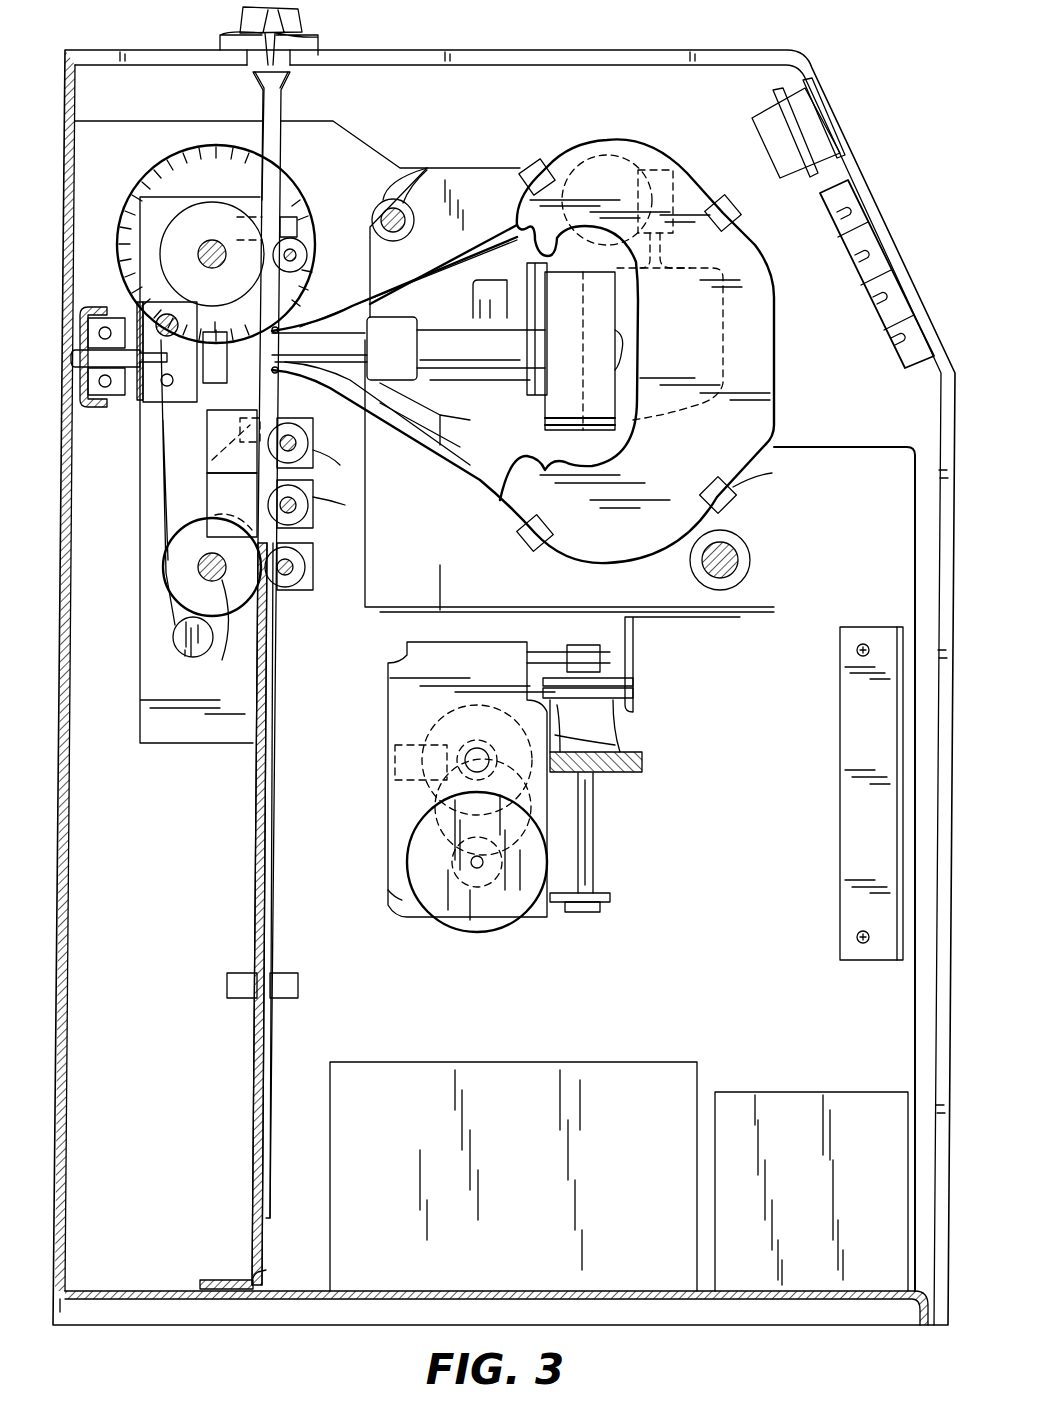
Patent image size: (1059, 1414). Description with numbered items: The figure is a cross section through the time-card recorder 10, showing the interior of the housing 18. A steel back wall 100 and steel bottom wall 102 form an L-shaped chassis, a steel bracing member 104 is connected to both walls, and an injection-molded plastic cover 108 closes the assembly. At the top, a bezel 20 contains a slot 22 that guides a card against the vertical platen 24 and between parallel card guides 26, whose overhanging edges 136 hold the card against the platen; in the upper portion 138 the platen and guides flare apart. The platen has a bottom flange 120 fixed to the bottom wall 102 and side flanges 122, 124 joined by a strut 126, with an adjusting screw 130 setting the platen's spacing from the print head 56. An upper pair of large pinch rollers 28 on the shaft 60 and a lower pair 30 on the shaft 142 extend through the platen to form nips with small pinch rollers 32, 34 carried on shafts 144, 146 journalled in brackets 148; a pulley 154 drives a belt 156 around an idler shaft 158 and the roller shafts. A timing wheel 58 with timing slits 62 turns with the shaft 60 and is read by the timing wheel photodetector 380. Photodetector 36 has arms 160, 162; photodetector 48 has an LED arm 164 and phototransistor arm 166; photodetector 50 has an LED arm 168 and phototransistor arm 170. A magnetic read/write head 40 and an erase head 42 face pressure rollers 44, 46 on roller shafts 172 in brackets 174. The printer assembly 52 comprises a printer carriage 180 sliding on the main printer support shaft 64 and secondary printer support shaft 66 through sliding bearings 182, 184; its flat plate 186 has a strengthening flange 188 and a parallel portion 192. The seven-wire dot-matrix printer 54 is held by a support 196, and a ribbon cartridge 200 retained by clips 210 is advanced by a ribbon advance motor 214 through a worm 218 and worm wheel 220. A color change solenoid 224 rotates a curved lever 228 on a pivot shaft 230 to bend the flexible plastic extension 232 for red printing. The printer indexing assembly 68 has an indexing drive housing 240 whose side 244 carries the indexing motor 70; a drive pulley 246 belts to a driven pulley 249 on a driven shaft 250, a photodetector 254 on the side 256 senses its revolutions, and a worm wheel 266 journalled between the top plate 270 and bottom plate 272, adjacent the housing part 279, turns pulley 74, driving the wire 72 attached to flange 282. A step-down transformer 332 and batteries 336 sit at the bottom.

The time-card recorder 10 is at (517, 42).
The housing 18 is at (746, 44).
The bezel 20 is at (318, 44).
The slot 22 is at (280, 23).
The platen 24 is at (255, 888).
The parallel card guides 26 is at (275, 892).
The upper pair of large pinch rollers 28 is at (180, 215).
The lower pair of large pinch rollers 30 is at (165, 565).
The upper pair of small pinch rollers 32 is at (306, 252).
The lower pair of small pinch rollers 34 is at (295, 600).
The photodetector 36 is at (300, 230).
The magnetic read/write head 40 is at (207, 442).
The magnetic erase head 42 is at (223, 500).
The pressure roller 44 is at (315, 430).
The pressure roller 46 is at (313, 500).
The photodetector 48 is at (226, 429).
The photodetector 50 is at (298, 967).
The printer assembly 52 is at (170, 195).
The seven-wire dot-matrix printer 54 is at (515, 330).
The print head 56 is at (228, 375).
The timing wheel 58 is at (133, 210).
The shaft 60 is at (205, 248).
The timing slits 62 is at (198, 152).
The main printer support shaft 64 is at (752, 560).
The secondary printer support shaft 66 is at (385, 205).
The printer indexing assembly 68 is at (661, 855).
The indexing motor 70 is at (432, 925).
The wire 72 is at (640, 680).
The pulley 74 is at (640, 696).
The steel back wall 100 is at (68, 240).
The steel bottom wall 102 is at (372, 1300).
The steel bracing member 104 is at (848, 447).
The cover 108 is at (920, 1015).
The flange 120 is at (220, 1275).
The side flange 122 is at (178, 745).
The side flange 124 is at (95, 310).
The strut 126 is at (108, 400).
The adjusting screw 130 is at (85, 405).
The overhanging edge 136 is at (290, 82).
The upper portion of the platen 138 is at (258, 73).
The shaft 142 is at (222, 580).
The shaft 144 is at (300, 270).
The shaft 146 is at (307, 564).
The brackets 148 is at (374, 275).
The pulley 154 is at (186, 642).
The belt 156 is at (152, 503).
The idler shaft 158 is at (178, 318).
The arm 160 is at (285, 215).
The arm 162 is at (248, 200).
The LED arm 164 is at (293, 418).
The phototransistor arm 166 is at (230, 455).
The LED arm 168 is at (300, 985).
The phototransistor arm 170 is at (236, 992).
The roller shafts 172 is at (312, 447).
The brackets 174 is at (313, 462).
The printer carriage 180 is at (495, 167).
The sliding bearing 182 is at (757, 540).
The sliding bearing 184 is at (420, 180).
The flat plate 186 is at (775, 452).
The flange 188 is at (460, 610).
The parallel portion 192 is at (662, 557).
The support 196 is at (470, 312).
The ribbon cartridge 200 is at (590, 563).
The clips 210 is at (545, 160).
The ribbon advance motor 214 is at (760, 330).
The worm 218 is at (678, 185).
The worm wheel 220 is at (628, 168).
The color change solenoid 224 is at (420, 472).
The curved lever 228 is at (455, 378).
The pivot shaft 230 is at (548, 425).
The flexible plastic extension 232 is at (418, 300).
The indexing drive housing 240 is at (420, 820).
The side 244 is at (600, 812).
The drive pulley 246 is at (495, 930).
The driven pulley 249 is at (430, 800).
The driven shaft 250 is at (468, 755).
The photodetector 254 is at (392, 757).
The side 256 is at (420, 735).
The worm wheel 266 is at (650, 762).
The top plate 270 is at (552, 652).
The bottom plate 272 is at (560, 915).
The housing 279 is at (600, 740).
The flange 282 is at (640, 638).
The step-down transformer 332 is at (772, 1092).
The batteries 336 is at (480, 1062).
The timing wheel photodetector 380 is at (300, 315).